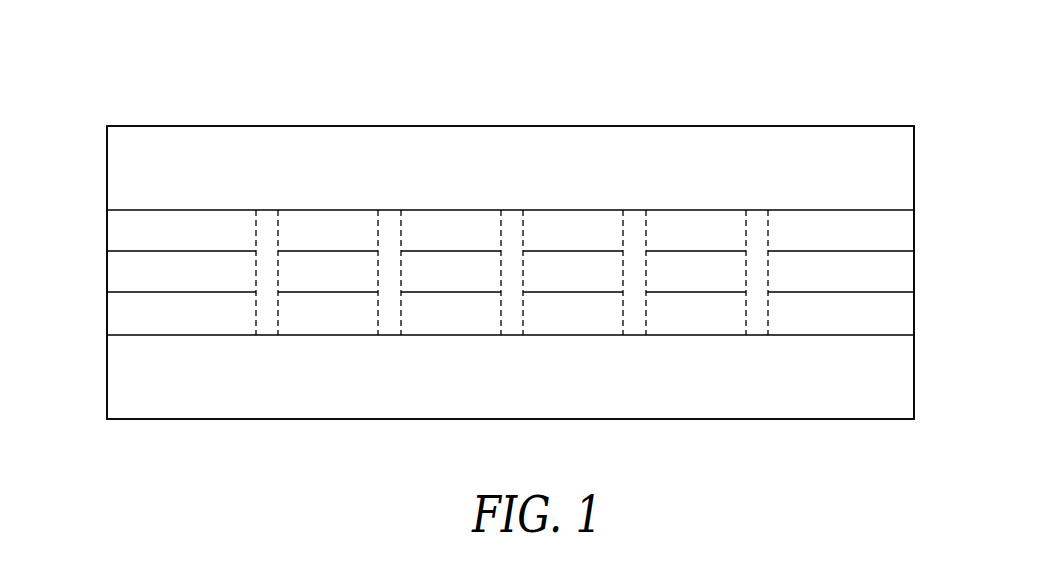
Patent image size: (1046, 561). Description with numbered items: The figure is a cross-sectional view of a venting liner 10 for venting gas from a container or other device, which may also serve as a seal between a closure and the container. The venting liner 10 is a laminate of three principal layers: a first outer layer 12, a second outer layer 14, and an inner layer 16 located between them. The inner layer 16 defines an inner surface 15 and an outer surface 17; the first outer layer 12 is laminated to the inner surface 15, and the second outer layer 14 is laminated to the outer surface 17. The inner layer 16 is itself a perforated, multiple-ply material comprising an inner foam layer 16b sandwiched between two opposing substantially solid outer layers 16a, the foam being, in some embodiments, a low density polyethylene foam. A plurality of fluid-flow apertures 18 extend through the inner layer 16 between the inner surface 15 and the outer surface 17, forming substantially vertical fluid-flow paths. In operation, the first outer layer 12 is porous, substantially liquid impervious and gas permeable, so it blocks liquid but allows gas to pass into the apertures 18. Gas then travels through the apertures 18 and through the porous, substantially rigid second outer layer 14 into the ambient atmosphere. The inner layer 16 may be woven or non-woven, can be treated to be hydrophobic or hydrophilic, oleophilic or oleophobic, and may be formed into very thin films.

The venting liner 10 is at (836, 60).
The first outer layer 12 is at (914, 404).
The second outer layer 14 is at (914, 144).
The inner surface 15 is at (897, 336).
The inner layer 16 is at (914, 280).
The outer substantially solid layers 16a is at (107, 231).
The inner foam layer 16b is at (107, 270).
The outer surface 17 is at (897, 210).
The fluid-flow apertures 18 is at (638, 215).